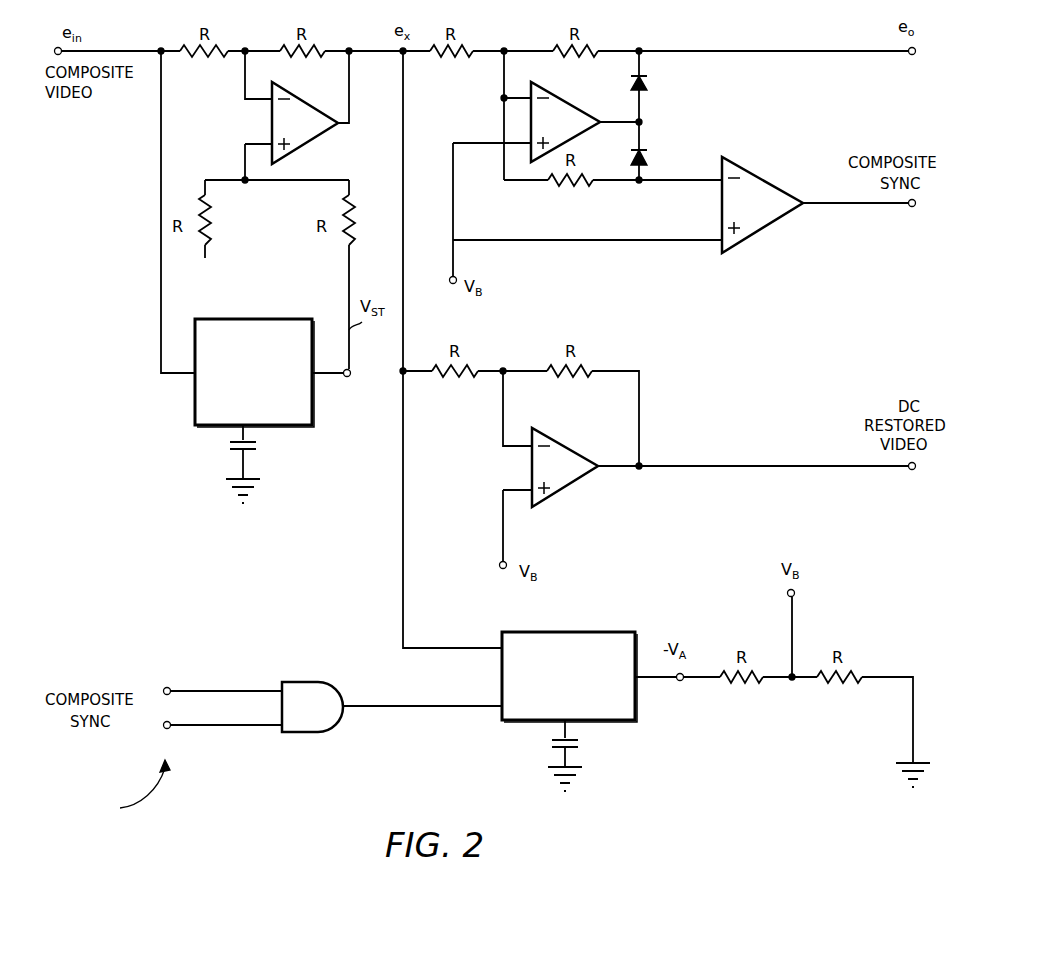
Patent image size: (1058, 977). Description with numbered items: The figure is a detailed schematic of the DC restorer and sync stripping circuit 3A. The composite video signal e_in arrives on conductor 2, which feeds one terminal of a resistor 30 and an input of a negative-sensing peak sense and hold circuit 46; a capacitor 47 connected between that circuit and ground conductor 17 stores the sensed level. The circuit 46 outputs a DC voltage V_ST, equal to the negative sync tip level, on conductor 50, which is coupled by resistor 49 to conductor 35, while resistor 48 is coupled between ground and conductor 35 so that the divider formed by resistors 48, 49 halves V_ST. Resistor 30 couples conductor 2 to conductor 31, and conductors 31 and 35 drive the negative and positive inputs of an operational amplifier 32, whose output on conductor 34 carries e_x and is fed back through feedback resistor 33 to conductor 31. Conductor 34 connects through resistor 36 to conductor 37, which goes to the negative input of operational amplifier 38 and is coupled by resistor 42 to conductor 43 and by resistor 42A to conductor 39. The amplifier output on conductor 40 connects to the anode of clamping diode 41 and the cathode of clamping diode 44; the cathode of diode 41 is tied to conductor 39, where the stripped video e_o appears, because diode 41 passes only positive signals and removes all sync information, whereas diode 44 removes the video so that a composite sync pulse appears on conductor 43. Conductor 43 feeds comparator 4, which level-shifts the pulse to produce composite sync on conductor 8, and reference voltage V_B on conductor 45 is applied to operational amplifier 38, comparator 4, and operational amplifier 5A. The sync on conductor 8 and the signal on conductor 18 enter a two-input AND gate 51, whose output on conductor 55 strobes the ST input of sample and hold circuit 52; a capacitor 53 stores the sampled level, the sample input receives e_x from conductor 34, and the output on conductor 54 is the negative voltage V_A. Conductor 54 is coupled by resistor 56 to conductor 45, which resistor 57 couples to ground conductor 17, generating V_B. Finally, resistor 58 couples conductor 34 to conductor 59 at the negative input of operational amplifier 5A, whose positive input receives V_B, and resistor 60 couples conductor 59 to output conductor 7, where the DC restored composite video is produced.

The conductor 2 is at (58, 47).
The resistor 30 is at (221, 56).
The conductor 31 is at (245, 47).
The operational amplifier 32 is at (316, 140).
The feedback resistor 33 is at (298, 56).
The conductor 34 is at (356, 48).
The conductor 35 is at (243, 178).
The resistor 36 is at (446, 56).
The conductor 37 is at (505, 47).
The operational amplifier 38 is at (574, 99).
The conductor 39 is at (620, 48).
The conductor 40 is at (645, 122).
The clamping diode 41 is at (646, 86).
The resistor 42 is at (578, 188).
The resistor 42A is at (573, 56).
The conductor 43 is at (640, 186).
The clamping diode 44 is at (646, 158).
The conductor 45 is at (453, 205).
The comparator 4 is at (790, 162).
The conductor 8 is at (915, 205).
The negative-sensing peak sense and hold circuit 46 is at (306, 318).
The capacitor 47 is at (250, 449).
The resistor 48 is at (212, 234).
The resistor 49 is at (354, 224).
The conductor 50 is at (334, 378).
The ground conductor 17 is at (232, 476).
The resistor 58 is at (452, 378).
The conductor 59 is at (503, 368).
The resistor 60 is at (566, 378).
The operational amplifier 5A is at (580, 456).
The output conductor 7 is at (915, 468).
The AND gate 51 is at (316, 680).
The conductor 18 is at (170, 728).
The conductor 55 is at (365, 708).
The sample and hold circuit 52 is at (602, 631).
The capacitor 53 is at (574, 750).
The conductor 54 is at (680, 681).
The resistor 56 is at (736, 684).
The resistor 57 is at (832, 684).
The circuit 3A is at (132, 789).